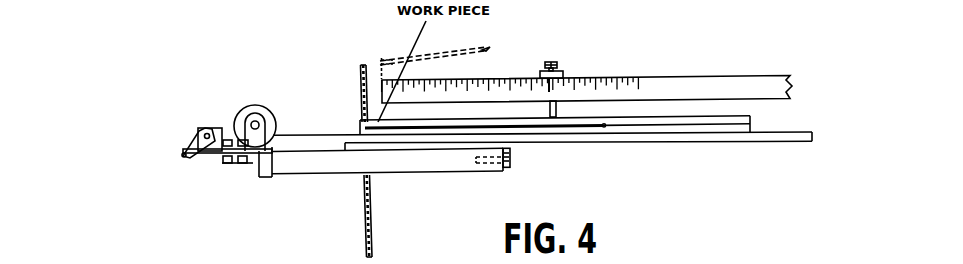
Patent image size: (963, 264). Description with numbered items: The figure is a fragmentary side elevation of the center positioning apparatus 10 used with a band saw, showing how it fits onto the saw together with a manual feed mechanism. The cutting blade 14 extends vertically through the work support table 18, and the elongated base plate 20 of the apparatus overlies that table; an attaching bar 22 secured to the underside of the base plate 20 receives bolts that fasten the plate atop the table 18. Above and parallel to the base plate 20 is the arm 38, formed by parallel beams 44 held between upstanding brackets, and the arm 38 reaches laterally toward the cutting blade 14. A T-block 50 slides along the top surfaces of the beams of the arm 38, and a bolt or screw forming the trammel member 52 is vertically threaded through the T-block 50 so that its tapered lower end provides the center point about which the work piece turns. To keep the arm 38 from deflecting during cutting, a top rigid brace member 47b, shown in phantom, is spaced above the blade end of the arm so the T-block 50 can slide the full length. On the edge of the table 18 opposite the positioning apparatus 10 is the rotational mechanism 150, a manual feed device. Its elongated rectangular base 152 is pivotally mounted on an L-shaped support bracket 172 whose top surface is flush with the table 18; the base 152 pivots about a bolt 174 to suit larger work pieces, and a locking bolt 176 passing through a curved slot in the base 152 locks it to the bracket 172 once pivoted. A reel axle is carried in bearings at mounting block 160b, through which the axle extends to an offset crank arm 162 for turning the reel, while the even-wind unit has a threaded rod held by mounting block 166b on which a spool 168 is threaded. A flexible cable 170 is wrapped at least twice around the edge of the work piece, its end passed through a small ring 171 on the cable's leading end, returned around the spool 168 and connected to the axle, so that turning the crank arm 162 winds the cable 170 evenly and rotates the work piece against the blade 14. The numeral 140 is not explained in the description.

The center positioning apparatus 10 is at (802, 128).
The cutting blade 14 is at (360, 78).
The work support table 18 is at (373, 169).
The base plate 20 is at (554, 143).
The attaching bar 22 is at (511, 166).
The arm 38 is at (680, 70).
The beams 44 is at (385, 39).
The top rigid brace member 47b is at (485, 45).
The T-block 50 is at (565, 72).
The trammel member 52 is at (554, 62).
The support 140 is at (790, 263).
The rotational mechanism 150 is at (143, 102).
The base 152 is at (214, 158).
The mounting block 160b is at (200, 128).
The offset crank arm 162 is at (185, 150).
The mounting block 166b is at (255, 142).
The spool 168 is at (258, 110).
The flexible cable 170 is at (579, 127).
The ring 171 is at (605, 128).
The L-shaped support bracket 172 is at (260, 179).
The bolt 174 is at (242, 166).
The locking bolt 176 is at (227, 165).